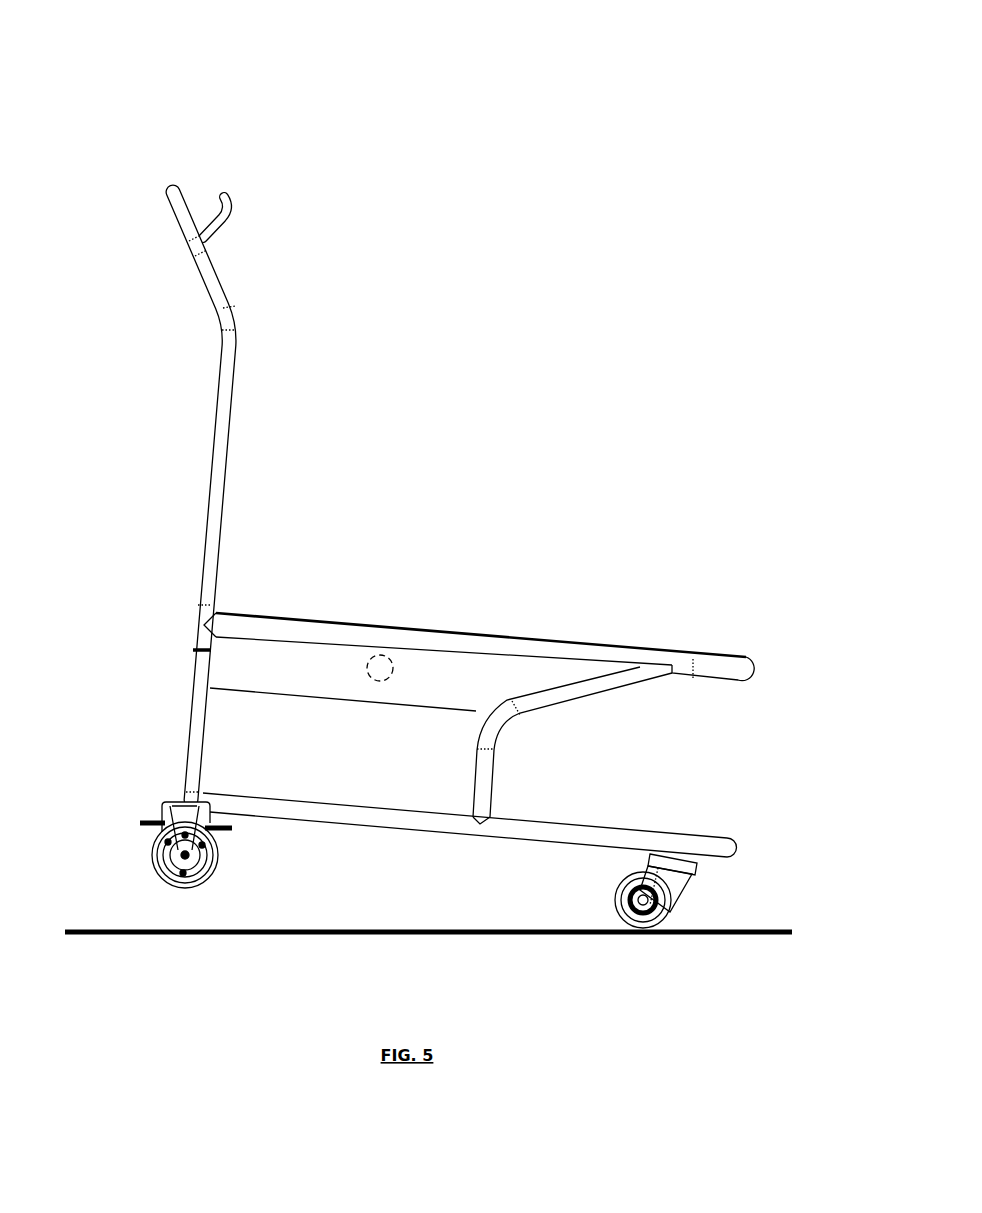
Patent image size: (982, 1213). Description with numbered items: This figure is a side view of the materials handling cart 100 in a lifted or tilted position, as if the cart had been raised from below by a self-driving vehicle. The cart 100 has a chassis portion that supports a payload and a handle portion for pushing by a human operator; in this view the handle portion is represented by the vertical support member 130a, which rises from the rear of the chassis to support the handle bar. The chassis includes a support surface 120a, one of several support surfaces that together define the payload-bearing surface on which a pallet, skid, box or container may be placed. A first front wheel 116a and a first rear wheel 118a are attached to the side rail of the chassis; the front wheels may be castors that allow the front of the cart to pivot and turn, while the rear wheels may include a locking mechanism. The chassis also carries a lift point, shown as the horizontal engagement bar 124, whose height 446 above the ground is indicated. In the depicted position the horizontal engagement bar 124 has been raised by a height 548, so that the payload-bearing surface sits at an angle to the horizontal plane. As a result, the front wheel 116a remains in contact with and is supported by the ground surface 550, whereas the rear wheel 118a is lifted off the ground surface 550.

The materials handling cart 100 is at (510, 68).
The vertical support member 130a is at (228, 398).
The support surface 120a is at (700, 653).
The horizontal engagement bar 124 is at (372, 664).
The height 446 is at (380, 860).
The height 548 is at (380, 910).
The first rear wheel 118a is at (183, 875).
The first front wheel 116a is at (625, 905).
The ground surface 550 is at (308, 937).